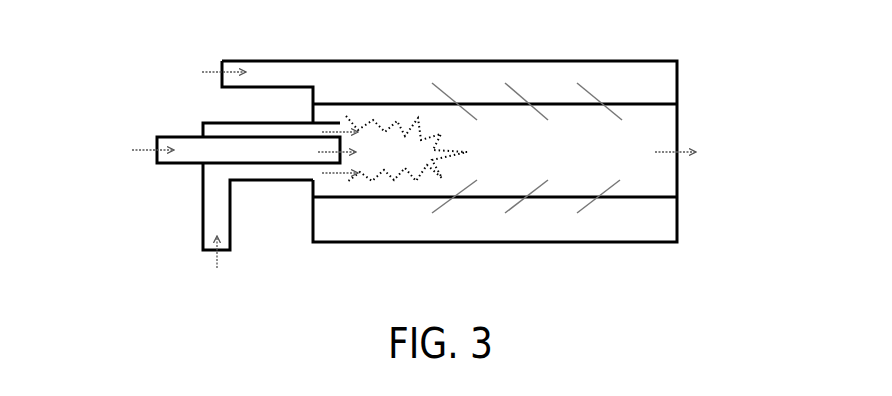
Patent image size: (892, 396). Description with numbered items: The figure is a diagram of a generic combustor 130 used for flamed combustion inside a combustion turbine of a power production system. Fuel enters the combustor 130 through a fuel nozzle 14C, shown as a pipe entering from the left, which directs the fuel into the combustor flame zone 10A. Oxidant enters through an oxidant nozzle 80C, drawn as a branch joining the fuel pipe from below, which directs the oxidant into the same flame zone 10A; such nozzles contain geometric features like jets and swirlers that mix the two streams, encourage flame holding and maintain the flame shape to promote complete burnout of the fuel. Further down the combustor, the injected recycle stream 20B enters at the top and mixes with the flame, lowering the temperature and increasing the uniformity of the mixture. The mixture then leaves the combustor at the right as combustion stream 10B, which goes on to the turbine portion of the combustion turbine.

The combustor 130 is at (484, 36).
The injected recycle stream 20B is at (200, 72).
The fuel nozzle 14C is at (188, 166).
The oxidant nozzle 80C is at (232, 215).
The combustor flame zone 10A is at (392, 149).
The combustion stream 10B is at (706, 150).